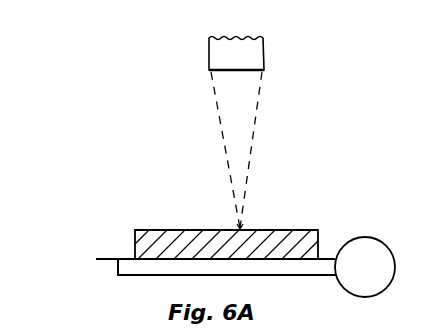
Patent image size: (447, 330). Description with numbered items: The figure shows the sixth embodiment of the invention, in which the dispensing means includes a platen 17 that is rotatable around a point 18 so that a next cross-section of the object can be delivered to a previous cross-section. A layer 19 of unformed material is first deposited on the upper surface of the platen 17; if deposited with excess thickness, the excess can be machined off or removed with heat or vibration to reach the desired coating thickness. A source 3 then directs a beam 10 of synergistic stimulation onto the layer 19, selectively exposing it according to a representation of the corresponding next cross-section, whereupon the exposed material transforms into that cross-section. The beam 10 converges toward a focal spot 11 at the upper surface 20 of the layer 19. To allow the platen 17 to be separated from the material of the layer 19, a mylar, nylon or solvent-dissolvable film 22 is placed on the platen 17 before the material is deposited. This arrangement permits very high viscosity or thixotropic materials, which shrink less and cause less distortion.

The source 3 is at (265, 41).
The beam of synergistic stimulation 10 is at (262, 96).
The focal point 11 is at (240, 228).
The platen 17 is at (138, 273).
The point 18 is at (376, 240).
The layer 19 is at (182, 231).
The upper surface 20 is at (147, 230).
The film 22 is at (110, 258).